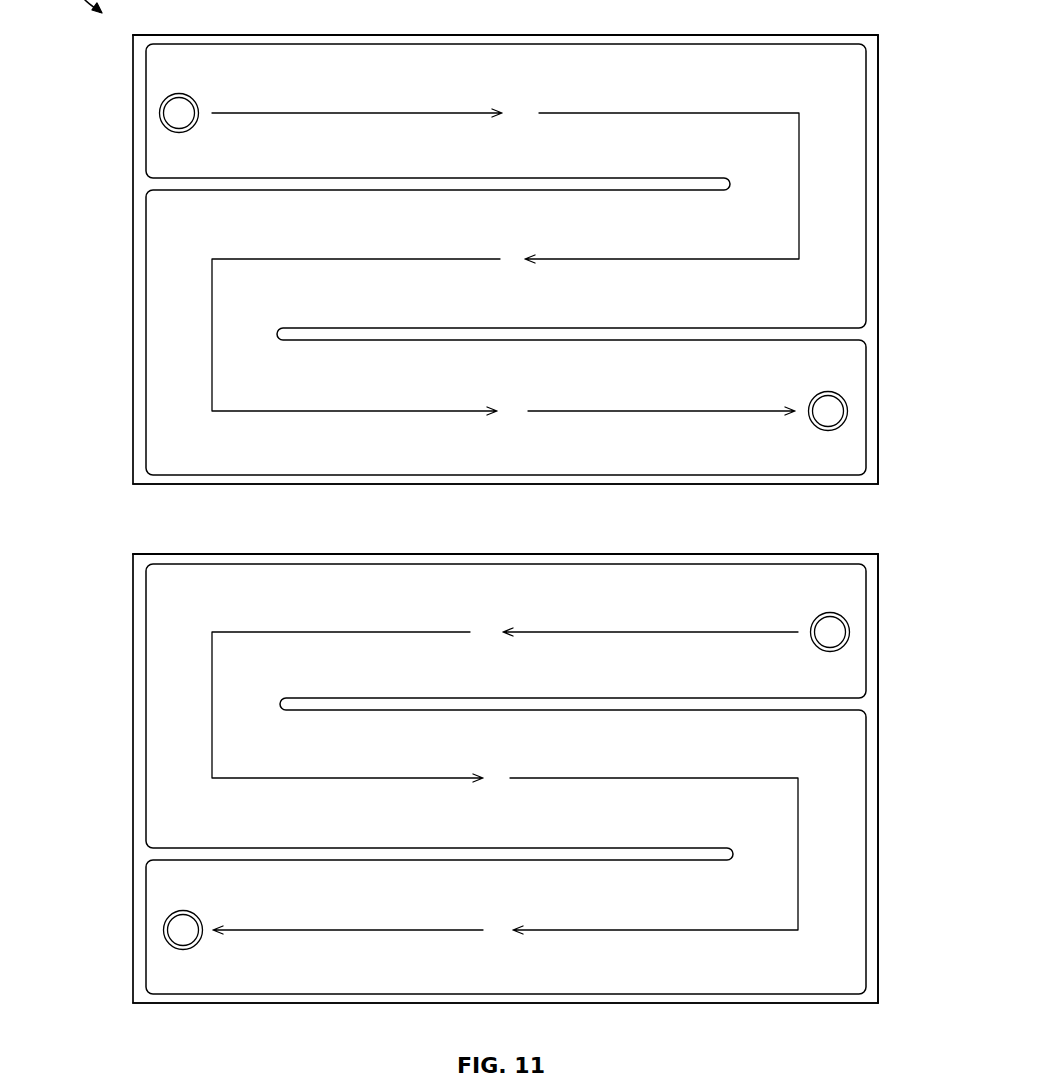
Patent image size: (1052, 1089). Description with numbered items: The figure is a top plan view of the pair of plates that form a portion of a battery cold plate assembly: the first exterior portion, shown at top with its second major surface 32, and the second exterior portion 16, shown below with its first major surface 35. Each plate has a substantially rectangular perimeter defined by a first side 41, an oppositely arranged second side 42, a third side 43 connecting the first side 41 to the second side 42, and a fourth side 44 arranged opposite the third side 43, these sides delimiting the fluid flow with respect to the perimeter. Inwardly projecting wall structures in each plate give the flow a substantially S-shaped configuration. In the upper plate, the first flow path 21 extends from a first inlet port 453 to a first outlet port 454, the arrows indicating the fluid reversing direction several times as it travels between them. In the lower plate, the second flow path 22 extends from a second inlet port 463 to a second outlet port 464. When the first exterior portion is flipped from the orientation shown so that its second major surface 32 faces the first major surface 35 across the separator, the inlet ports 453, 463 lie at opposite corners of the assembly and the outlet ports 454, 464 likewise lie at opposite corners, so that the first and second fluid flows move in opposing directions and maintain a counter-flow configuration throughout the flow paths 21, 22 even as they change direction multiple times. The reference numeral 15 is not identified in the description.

The plate edge 15 is at (707, 38).
The second exterior portion 16 is at (490, 560).
The first flow path 21 is at (826, 138).
The second flow path 22 is at (171, 694).
The second major surface 32 is at (505, 17).
The first major surface 35 is at (505, 526).
The first side 41 is at (133, 213).
The second side 42 is at (878, 259).
The third side 43 is at (193, 484).
The fourth side 44 is at (183, 34).
The first inlet port 453 is at (180, 113).
The first outlet port 454 is at (828, 411).
The second inlet port 463 is at (830, 632).
The second outlet port 464 is at (180, 928).